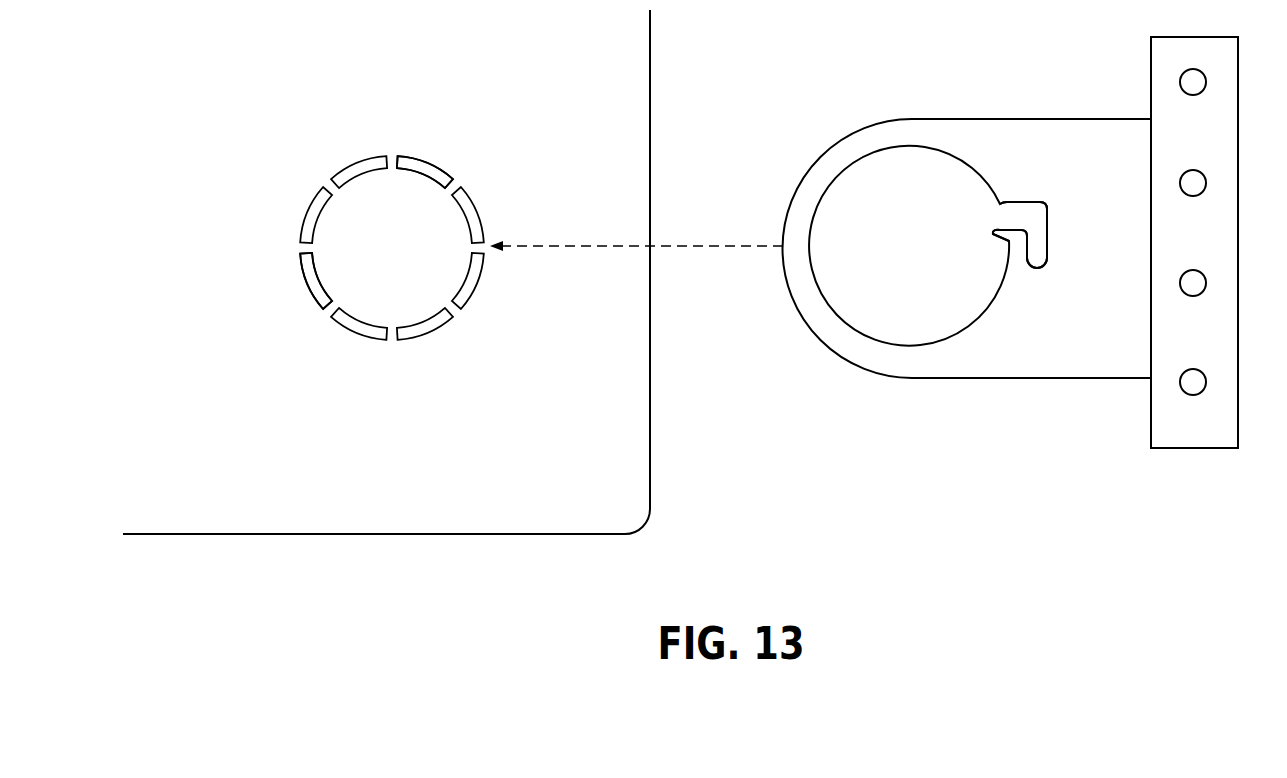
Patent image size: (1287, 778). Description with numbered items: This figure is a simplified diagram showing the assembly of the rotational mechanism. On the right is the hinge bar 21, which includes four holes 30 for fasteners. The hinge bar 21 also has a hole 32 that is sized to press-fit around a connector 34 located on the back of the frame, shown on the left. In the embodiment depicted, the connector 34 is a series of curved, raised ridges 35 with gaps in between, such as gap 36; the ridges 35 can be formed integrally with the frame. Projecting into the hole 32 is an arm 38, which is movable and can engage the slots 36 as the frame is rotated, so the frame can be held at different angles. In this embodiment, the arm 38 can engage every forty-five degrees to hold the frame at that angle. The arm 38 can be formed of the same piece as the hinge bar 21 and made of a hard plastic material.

The hinge bar 21 is at (980, 402).
The holes 30 is at (1197, 80).
The hole 32 is at (893, 188).
The connector 34 is at (367, 150).
The curved, raised ridges 35 is at (428, 170).
The gap 36 is at (462, 325).
The arm 38 is at (993, 231).